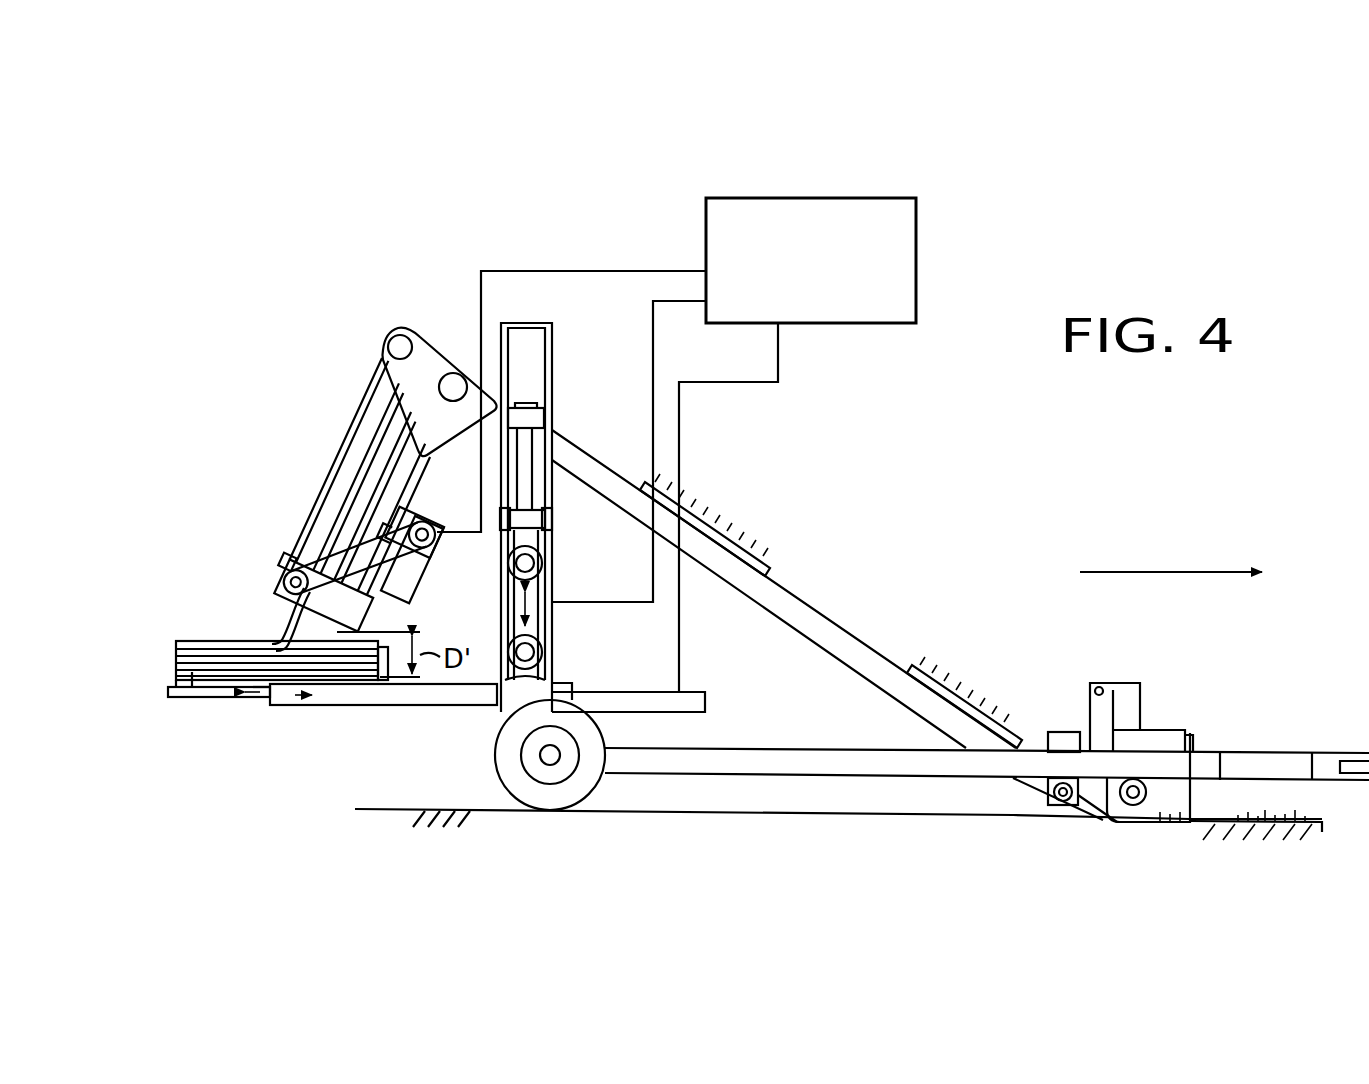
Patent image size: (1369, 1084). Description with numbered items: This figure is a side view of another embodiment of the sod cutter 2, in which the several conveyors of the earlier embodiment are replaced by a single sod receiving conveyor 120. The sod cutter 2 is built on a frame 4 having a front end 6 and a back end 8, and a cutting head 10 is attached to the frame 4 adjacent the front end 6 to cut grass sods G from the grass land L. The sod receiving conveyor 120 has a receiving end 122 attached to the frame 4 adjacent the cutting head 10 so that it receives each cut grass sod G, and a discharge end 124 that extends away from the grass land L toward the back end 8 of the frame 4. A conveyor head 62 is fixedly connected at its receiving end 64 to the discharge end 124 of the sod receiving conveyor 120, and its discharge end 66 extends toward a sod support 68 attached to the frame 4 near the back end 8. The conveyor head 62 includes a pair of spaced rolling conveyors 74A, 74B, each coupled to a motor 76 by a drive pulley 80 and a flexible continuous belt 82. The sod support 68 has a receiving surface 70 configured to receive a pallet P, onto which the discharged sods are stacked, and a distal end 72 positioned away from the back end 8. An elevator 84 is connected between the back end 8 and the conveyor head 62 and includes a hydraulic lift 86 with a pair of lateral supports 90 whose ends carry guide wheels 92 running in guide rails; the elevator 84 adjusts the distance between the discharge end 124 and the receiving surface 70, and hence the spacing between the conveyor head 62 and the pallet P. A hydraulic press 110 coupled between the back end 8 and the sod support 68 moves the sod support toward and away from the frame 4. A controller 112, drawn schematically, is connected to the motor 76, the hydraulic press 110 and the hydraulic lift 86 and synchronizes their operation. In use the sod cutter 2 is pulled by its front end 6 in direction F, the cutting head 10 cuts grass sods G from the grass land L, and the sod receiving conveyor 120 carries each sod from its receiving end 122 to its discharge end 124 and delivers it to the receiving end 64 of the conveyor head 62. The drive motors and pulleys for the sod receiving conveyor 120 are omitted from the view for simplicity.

The sod cutter 2 is at (1000, 560).
The frame 4 is at (810, 762).
The front end 6 is at (1262, 713).
The back end 8 is at (440, 740).
The cutting head 10 is at (1152, 702).
The conveyor head 62 is at (344, 437).
The receiving end 64 is at (420, 328).
The discharge end 66 is at (321, 592).
The sod support 68 is at (240, 699).
The receiving surface 70 is at (217, 681).
The distal end 72 is at (168, 692).
The rolling conveyor 74A is at (351, 466).
The rolling conveyor 74B is at (389, 503).
The motor 76 is at (400, 553).
The drive pulley 80 is at (296, 582).
The flexible continuous belt 82 is at (359, 558).
The elevator 84 is at (576, 619).
The hydraulic lift 86 is at (550, 497).
The lateral support 90 is at (537, 423).
The guide wheel 92 is at (543, 563).
The hydraulic press 110 is at (700, 692).
The controller 112 is at (832, 198).
The sod receiving conveyor 120 is at (785, 590).
The receiving end 122 is at (1073, 805).
The discharge end 124 is at (482, 406).
The grass sod G is at (703, 518).
The pallet P is at (175, 677).
The direction F is at (1150, 572).
The grass land L is at (1322, 832).